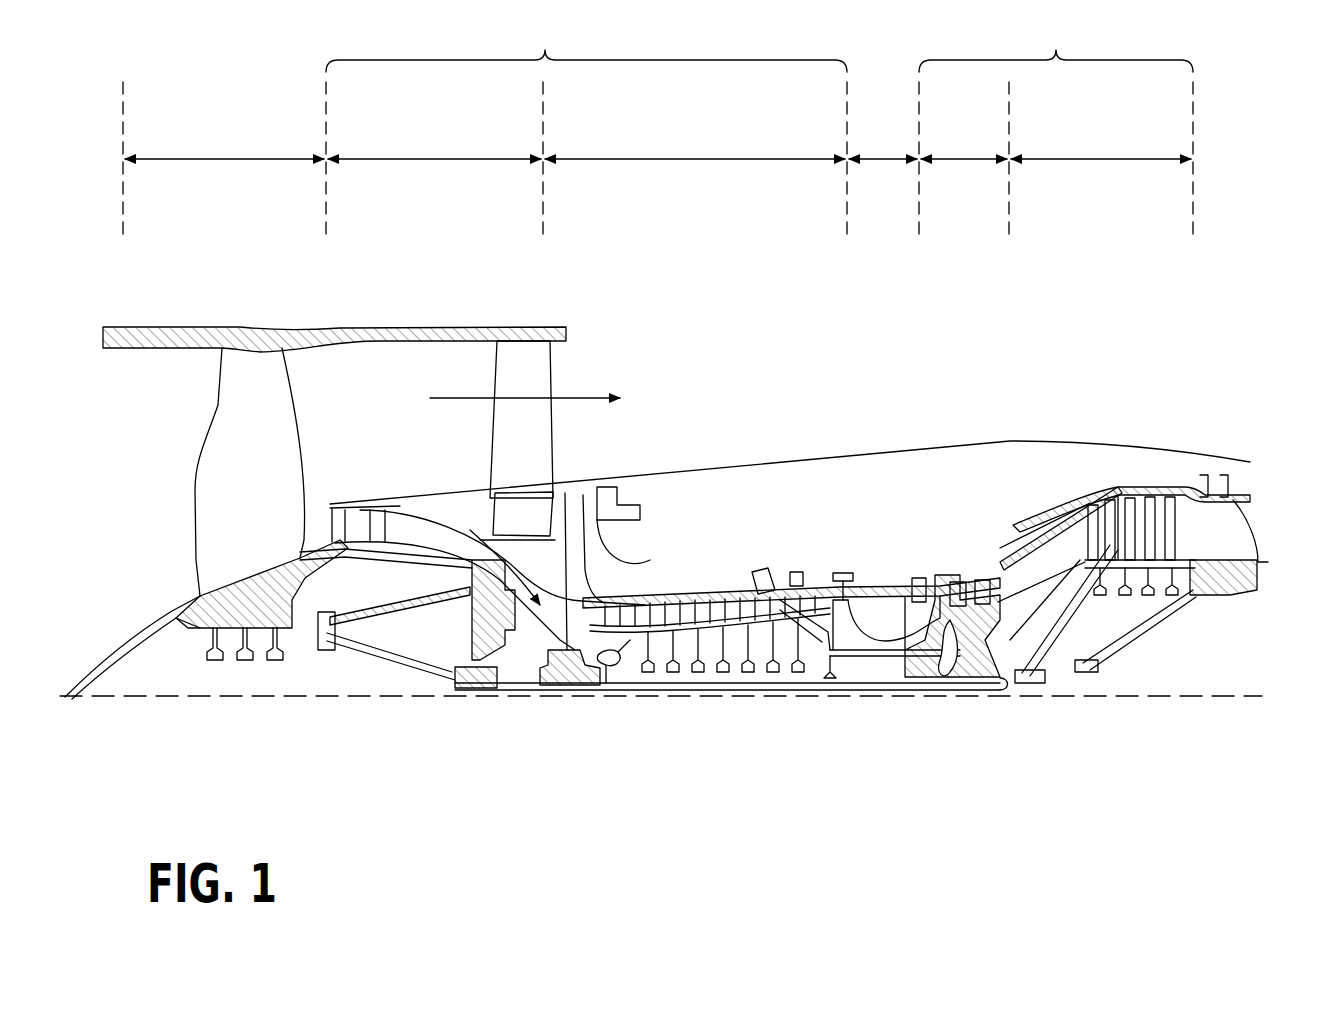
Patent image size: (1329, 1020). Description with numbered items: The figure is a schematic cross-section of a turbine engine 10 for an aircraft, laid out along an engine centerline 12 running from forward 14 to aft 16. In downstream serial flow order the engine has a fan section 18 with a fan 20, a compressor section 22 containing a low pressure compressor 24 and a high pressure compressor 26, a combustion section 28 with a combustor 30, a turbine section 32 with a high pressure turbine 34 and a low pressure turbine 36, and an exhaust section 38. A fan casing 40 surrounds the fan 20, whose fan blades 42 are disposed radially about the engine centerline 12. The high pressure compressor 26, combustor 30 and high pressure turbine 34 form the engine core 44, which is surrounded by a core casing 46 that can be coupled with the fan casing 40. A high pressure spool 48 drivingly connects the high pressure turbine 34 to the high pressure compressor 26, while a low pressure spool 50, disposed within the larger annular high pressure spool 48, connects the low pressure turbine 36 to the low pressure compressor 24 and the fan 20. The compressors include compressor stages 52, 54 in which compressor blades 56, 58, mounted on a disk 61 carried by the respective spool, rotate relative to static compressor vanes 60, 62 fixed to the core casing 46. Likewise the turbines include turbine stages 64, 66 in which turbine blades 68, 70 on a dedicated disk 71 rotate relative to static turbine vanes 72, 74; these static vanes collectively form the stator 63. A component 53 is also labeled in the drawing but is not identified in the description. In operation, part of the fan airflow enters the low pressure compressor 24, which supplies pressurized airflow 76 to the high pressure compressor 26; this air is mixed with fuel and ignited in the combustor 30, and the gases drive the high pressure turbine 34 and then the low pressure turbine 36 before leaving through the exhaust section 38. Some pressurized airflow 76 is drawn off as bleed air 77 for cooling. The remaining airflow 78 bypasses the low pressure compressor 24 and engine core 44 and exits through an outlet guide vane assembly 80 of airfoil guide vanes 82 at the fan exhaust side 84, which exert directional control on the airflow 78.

The turbine engine 10 is at (876, 318).
The engine centerline 12 is at (222, 698).
The forward 14 is at (102, 460).
The aft 16 is at (1312, 545).
The fan section 18 is at (224, 145).
The fan 20 is at (155, 538).
The compressor section 22 is at (586, 46).
The low pressure compressor 24 is at (434, 145).
The high pressure compressor 26 is at (695, 145).
The combustion section 28 is at (883, 139).
The combustor 30 is at (885, 600).
The turbine section 32 is at (1056, 46).
The high pressure turbine 34 is at (964, 145).
The low pressure turbine 36 is at (1101, 145).
The exhaust section 38 is at (1272, 500).
The fan casing 40 is at (356, 328).
The fan blades 42 is at (279, 404).
The engine core 44 is at (825, 495).
The core casing 46 is at (1057, 510).
The HP shaft or spool 48 is at (858, 683).
The LP shaft or spool 50 is at (475, 692).
The compressor stages 52 is at (472, 529).
The gearbox 53 is at (436, 565).
The compressor stages 54 is at (791, 582).
The compressor blades 56 is at (369, 496).
The compressor blades 58 is at (618, 600).
The static compressor vanes 60 is at (342, 515).
The disk 61 is at (612, 667).
The static compressor vanes 62 is at (620, 585).
The stator 63 is at (1120, 470).
The turbine stages 64 is at (948, 537).
The turbine stages 66 is at (1124, 484).
The turbine blades 68 is at (966, 559).
The turbine blades 70 is at (1178, 490).
The disk 71 is at (940, 652).
The static turbine vanes 72 is at (918, 580).
The static turbine vanes 74 is at (1165, 490).
The pressurized airflow 76 is at (525, 596).
The bleed air 77 is at (728, 590).
The airflow 78 is at (455, 395).
The outlet guide vane assembly 80 is at (575, 450).
The airfoil guide vanes 82 is at (505, 438).
The fan exhaust side 84 is at (598, 355).